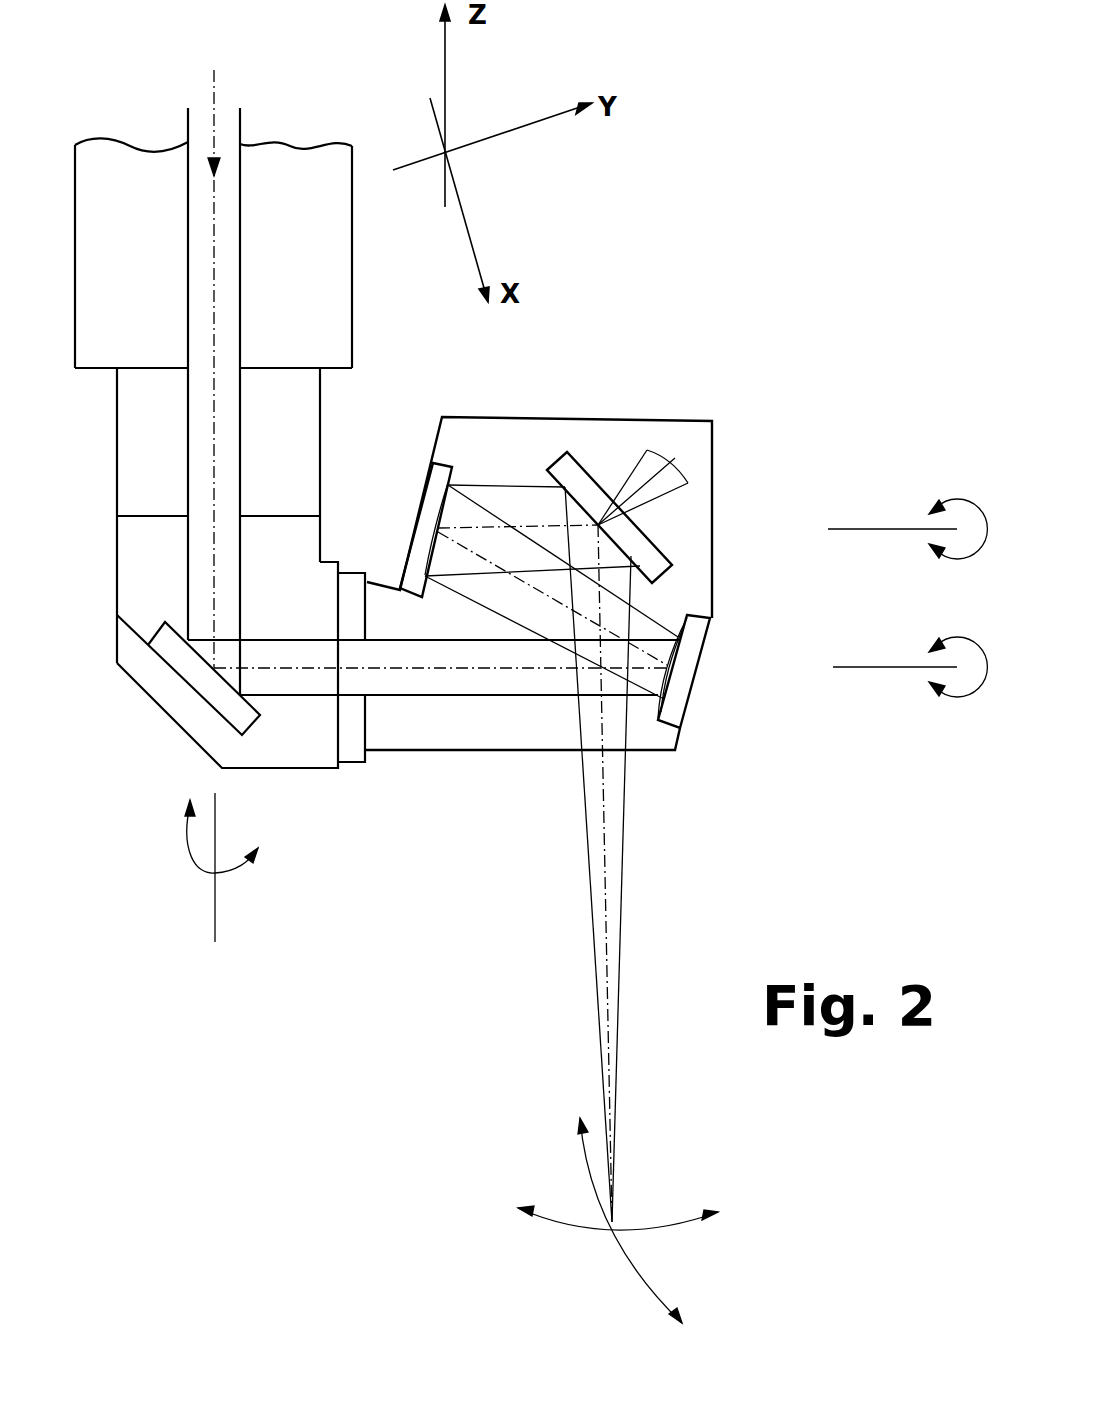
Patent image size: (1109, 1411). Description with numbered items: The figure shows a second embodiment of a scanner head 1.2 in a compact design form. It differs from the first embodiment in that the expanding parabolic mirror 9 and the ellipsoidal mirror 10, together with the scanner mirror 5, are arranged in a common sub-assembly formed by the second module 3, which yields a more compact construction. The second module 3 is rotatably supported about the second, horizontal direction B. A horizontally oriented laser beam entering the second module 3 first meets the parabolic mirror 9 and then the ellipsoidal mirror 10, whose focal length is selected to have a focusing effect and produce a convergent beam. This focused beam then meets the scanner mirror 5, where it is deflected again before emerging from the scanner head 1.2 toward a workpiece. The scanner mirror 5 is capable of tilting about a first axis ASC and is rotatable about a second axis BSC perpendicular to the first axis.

The scanner head 1.2 is at (380, 506).
The second module 3 is at (712, 478).
The scanner mirror 5 is at (655, 572).
The parabolic mirror 9 is at (685, 675).
The ellipsoidal mirror 10 is at (430, 507).
The first axis ASC is at (665, 462).
The second axis BSC is at (900, 528).
The second, horizontal direction B is at (893, 668).